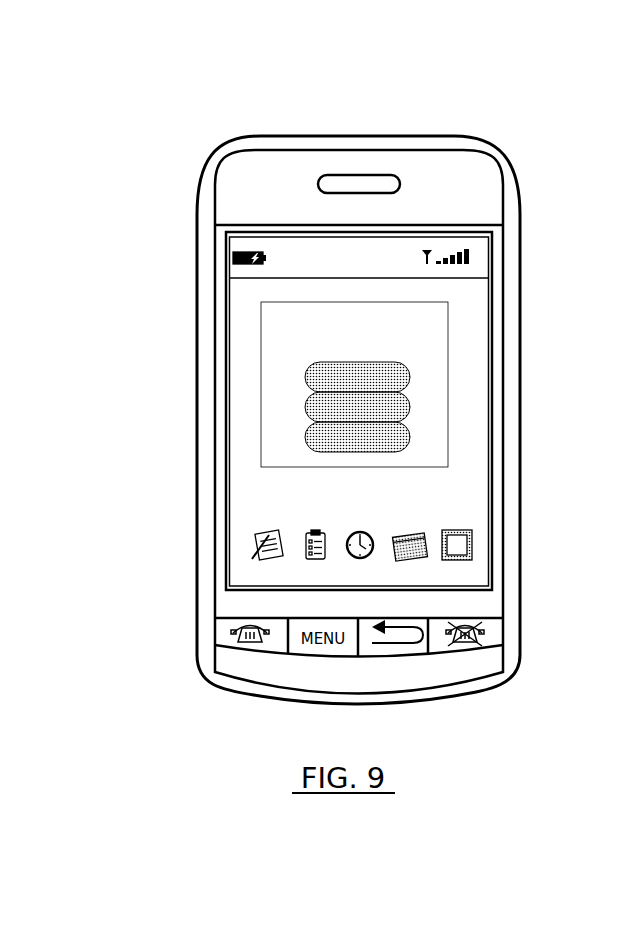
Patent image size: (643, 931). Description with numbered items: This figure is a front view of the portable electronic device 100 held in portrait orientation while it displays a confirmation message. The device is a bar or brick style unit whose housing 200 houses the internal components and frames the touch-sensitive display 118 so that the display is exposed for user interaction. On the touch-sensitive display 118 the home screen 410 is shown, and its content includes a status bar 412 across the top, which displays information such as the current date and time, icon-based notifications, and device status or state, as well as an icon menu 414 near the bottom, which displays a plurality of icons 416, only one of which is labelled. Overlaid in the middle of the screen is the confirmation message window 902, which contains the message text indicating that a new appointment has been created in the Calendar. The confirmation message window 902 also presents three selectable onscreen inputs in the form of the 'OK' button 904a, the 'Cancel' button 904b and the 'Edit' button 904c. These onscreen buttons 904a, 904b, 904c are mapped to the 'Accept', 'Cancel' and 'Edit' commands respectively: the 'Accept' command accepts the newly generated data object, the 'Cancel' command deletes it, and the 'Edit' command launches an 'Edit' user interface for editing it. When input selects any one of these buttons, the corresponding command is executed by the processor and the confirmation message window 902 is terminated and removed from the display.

The portable electronic device 100 is at (512, 128).
The housing 200 is at (505, 348).
The touch-sensitive display 118 is at (475, 521).
The status bar 412 is at (483, 262).
The confirmation message window 902 is at (285, 363).
The 'OK' onscreen button 904a is at (305, 380).
The 'Cancel' onscreen button 904b is at (305, 410).
The 'Edit' onscreen button 904c is at (305, 438).
The home screen 410 is at (344, 504).
The icon menu 414 is at (268, 571).
The icon 416 is at (260, 548).